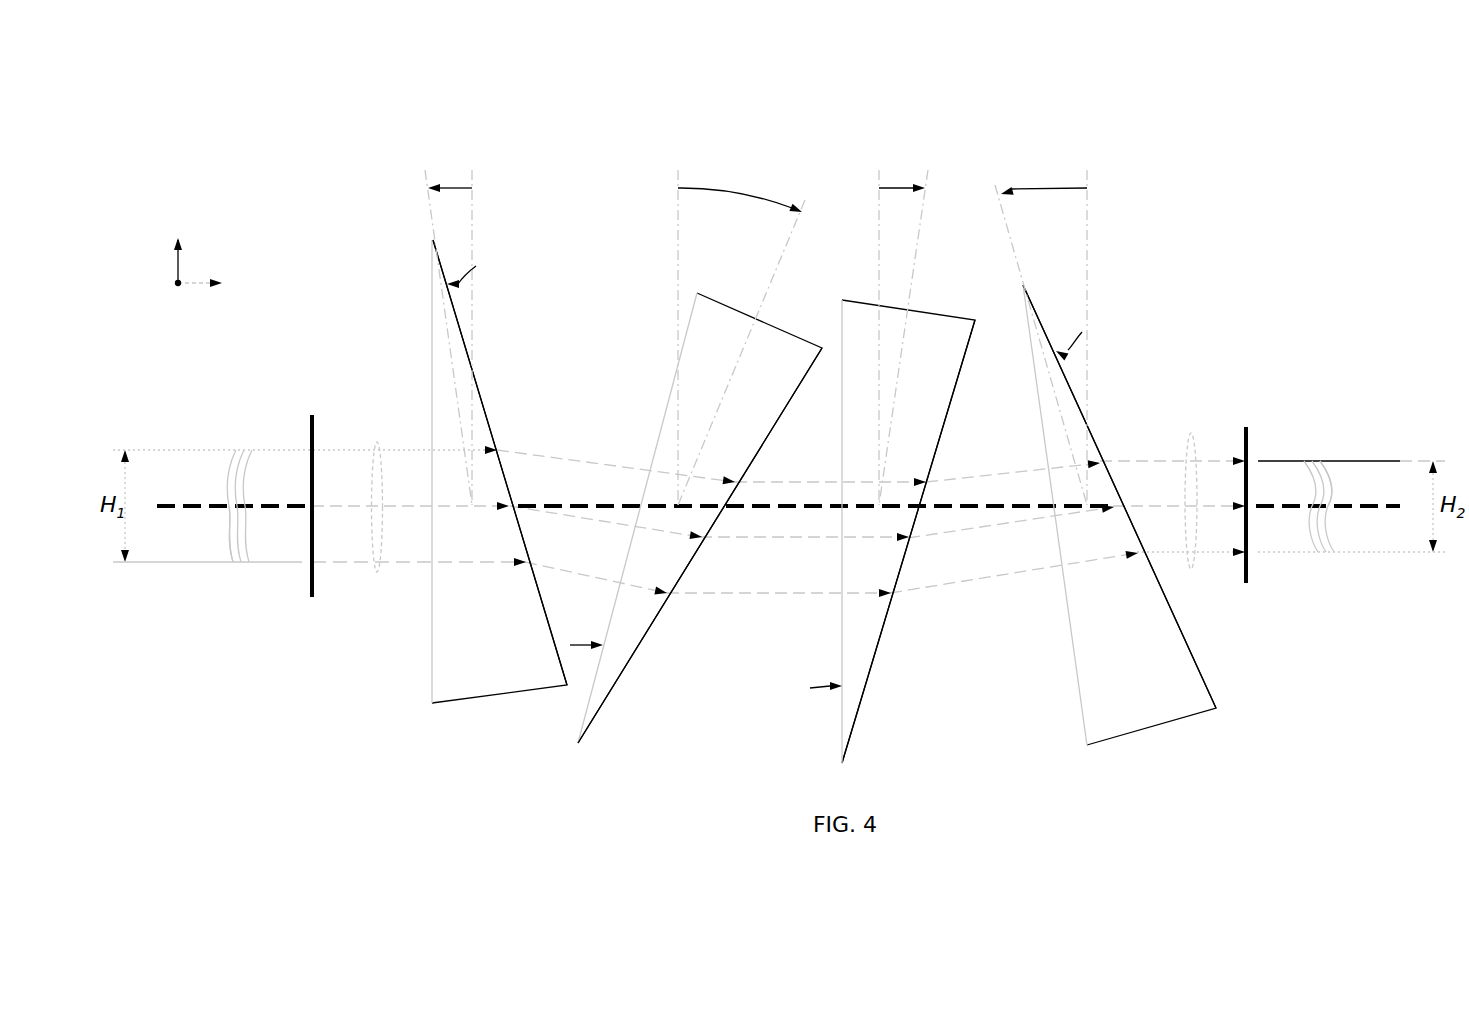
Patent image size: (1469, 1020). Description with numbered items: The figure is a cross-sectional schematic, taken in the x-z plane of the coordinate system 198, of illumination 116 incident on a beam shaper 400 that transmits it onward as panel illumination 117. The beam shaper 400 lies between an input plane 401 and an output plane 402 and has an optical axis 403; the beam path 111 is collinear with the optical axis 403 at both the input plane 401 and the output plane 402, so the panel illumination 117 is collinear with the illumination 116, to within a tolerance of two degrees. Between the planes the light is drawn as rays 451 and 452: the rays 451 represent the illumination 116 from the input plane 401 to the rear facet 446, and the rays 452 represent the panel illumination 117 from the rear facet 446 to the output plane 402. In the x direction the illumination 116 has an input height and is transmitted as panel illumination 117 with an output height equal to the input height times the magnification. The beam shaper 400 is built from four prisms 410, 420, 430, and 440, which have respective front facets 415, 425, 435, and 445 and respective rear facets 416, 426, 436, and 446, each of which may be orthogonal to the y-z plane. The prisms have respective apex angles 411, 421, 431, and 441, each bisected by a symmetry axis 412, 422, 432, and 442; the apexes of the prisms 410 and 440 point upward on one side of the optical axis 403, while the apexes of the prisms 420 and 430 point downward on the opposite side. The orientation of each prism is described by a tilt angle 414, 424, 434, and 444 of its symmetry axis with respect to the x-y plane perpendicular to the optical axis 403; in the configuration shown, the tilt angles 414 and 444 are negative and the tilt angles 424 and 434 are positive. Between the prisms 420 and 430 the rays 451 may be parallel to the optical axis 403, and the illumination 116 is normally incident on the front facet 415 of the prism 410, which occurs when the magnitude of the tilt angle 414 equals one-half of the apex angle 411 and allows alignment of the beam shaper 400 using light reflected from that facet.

The beam shaper 400 is at (215, 134).
The coordinate system 198 is at (176, 268).
The beam path 111 is at (222, 503).
The illumination 116 is at (230, 533).
The panel illumination 117 is at (1330, 484).
The input plane 401 is at (309, 432).
The output plane 402 is at (1250, 566).
The optical axis 403 is at (577, 503).
The rays 451 is at (377, 440).
The rays 452 is at (1193, 432).
The prism 410 is at (459, 416).
The apex angle 411 is at (418, 290).
The symmetry axis 412 is at (426, 203).
The tilt angle 414 is at (450, 188).
The front facet 415 is at (420, 618).
The rear facet 416 is at (494, 394).
The prism 420 is at (696, 441).
The apex angle 421 is at (641, 670).
The symmetry axis 422 is at (785, 247).
The tilt angle 424 is at (745, 194).
The front facet 425 is at (660, 381).
The rear facet 426 is at (620, 712).
The prism 430 is at (875, 448).
The apex angle 431 is at (880, 693).
The symmetry axis 432 is at (913, 268).
The tilt angle 434 is at (898, 186).
The front facet 435 is at (830, 628).
The rear facet 436 is at (897, 634).
The prism 440 is at (1103, 440).
The apex angle 441 is at (1022, 362).
The symmetry axis 442 is at (1005, 224).
The tilt angle 444 is at (1040, 188).
The front facet 445 is at (1060, 645).
The rear facet 446 is at (1199, 627).